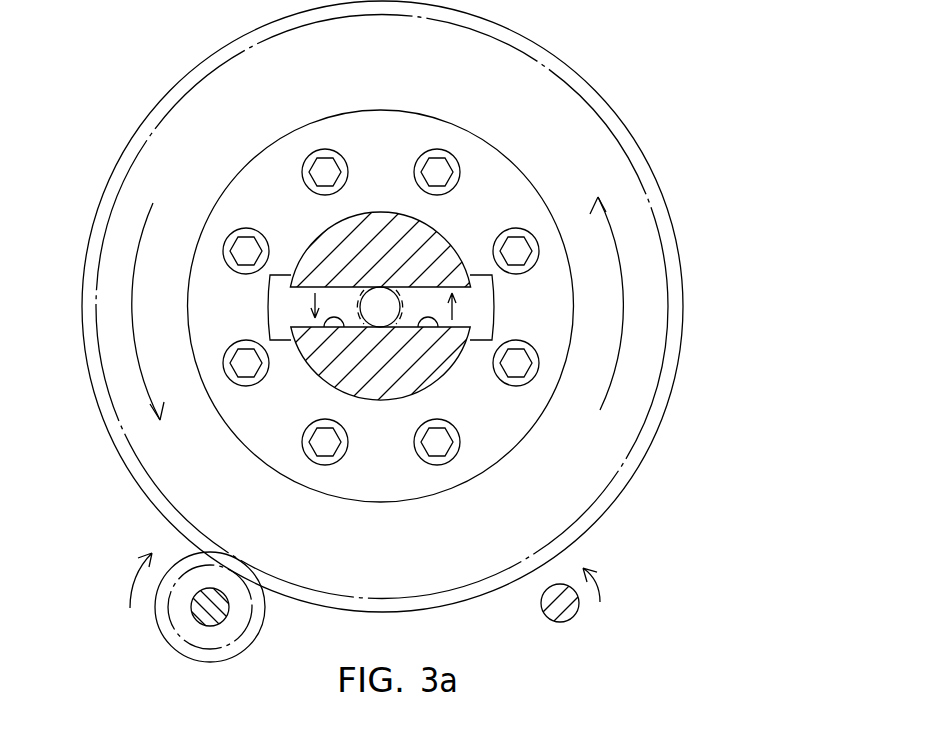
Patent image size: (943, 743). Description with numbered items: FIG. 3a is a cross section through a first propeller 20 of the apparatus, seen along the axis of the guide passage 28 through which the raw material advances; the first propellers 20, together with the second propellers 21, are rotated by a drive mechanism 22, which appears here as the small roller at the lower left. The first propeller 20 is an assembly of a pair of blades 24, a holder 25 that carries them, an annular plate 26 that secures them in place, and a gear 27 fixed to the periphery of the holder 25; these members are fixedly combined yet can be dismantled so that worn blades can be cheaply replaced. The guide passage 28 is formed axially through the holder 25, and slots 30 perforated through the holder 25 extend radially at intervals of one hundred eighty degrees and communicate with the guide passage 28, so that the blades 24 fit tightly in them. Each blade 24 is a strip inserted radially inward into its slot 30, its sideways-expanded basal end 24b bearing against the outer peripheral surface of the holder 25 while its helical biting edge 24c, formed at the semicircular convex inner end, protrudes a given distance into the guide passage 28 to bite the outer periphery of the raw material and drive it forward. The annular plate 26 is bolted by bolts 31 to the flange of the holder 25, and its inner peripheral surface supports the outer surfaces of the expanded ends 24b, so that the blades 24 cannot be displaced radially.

The first propeller 20 is at (413, 306).
The second propeller 21 is at (738, 80).
The drive mechanism 22 is at (152, 618).
The blade 24 is at (342, 300).
The basal end 24b is at (283, 307).
The helical biting edge 24c is at (378, 287).
The holder 25 is at (430, 372).
The annular plate 26 is at (480, 158).
The gear 27 is at (596, 147).
The guide passage 28 is at (378, 330).
The slot 30 is at (340, 325).
The bolt 31 is at (432, 165).